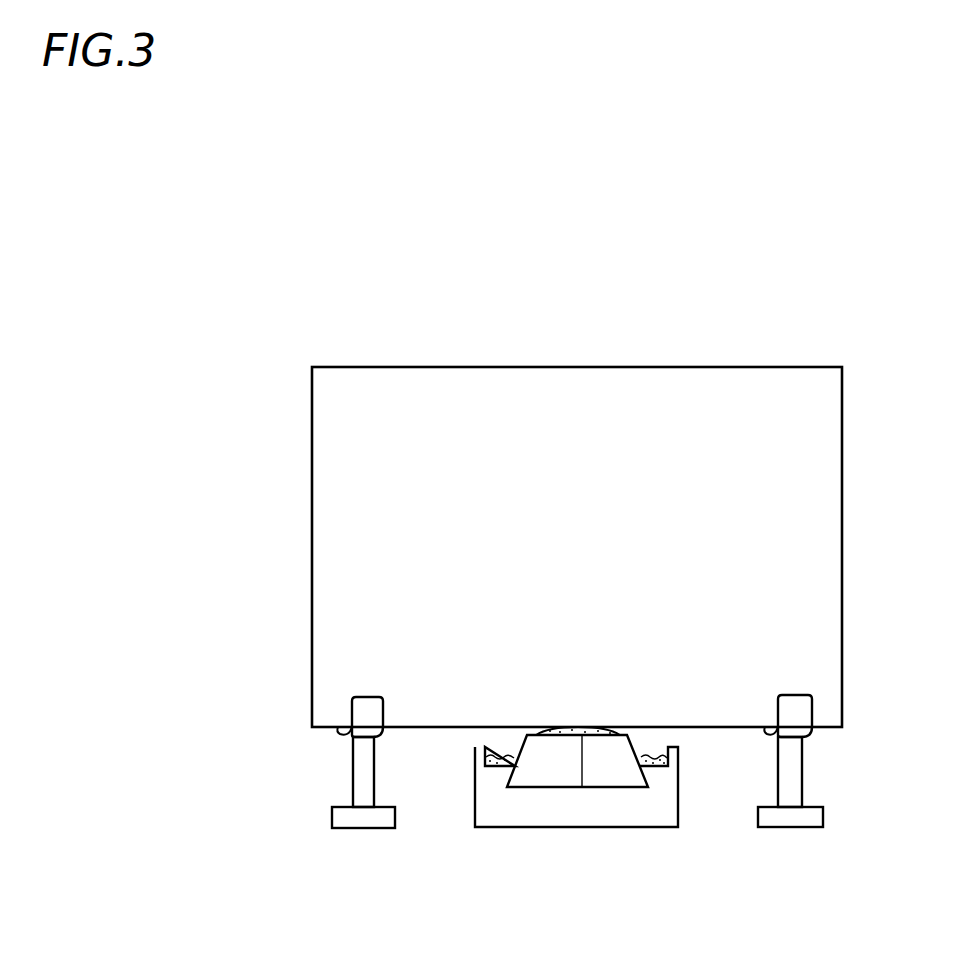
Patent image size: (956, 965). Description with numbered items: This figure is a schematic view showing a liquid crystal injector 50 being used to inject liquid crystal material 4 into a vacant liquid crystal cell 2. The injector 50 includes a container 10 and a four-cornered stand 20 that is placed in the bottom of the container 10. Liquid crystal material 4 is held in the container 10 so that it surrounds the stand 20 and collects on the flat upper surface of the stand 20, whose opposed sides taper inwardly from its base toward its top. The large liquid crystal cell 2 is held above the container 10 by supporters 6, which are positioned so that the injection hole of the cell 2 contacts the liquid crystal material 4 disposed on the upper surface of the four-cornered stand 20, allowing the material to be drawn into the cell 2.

The liquid crystal cell 2 is at (822, 588).
The liquid crystal material 4 is at (582, 787).
The supporters 6 is at (362, 767).
The container 10 is at (507, 827).
The four-cornered stand 20 is at (635, 777).
The liquid crystal injector 50 is at (695, 843).